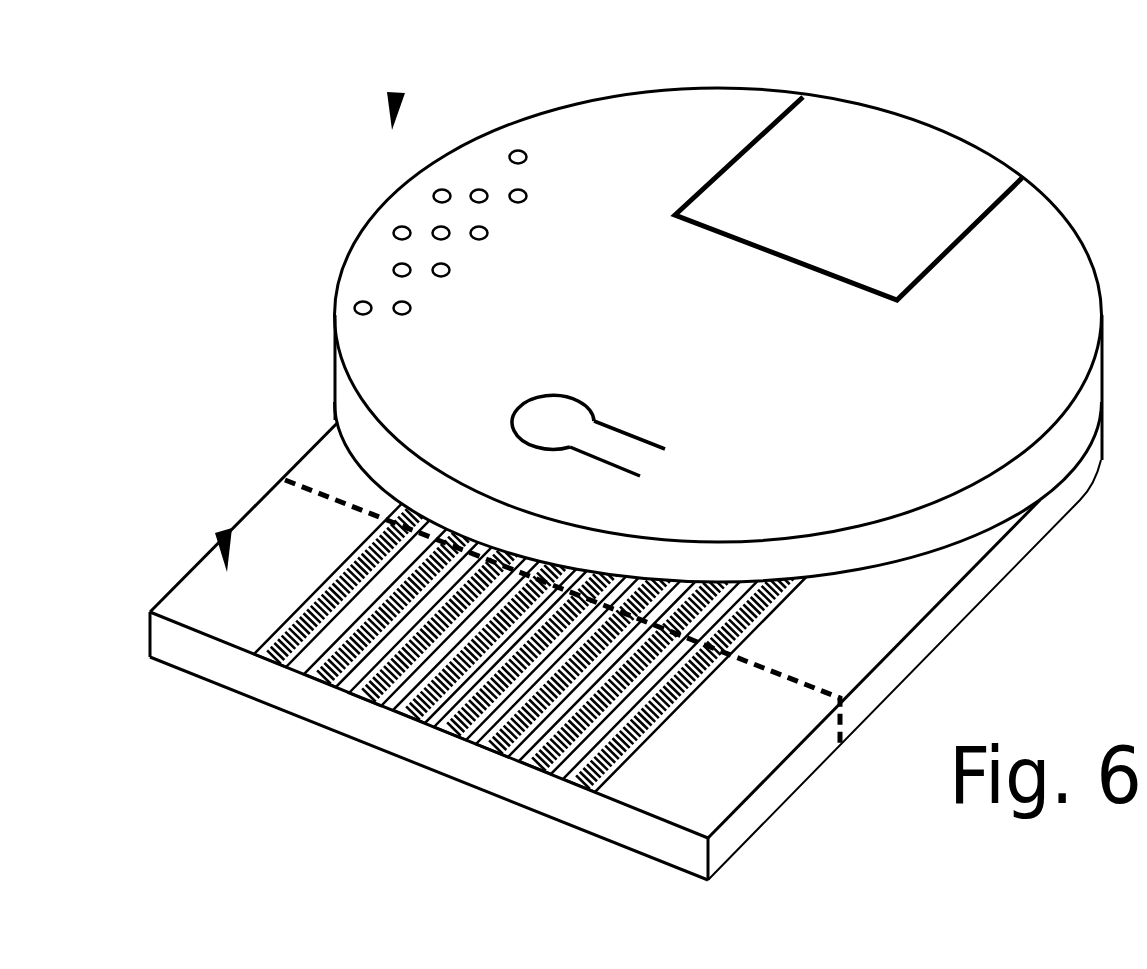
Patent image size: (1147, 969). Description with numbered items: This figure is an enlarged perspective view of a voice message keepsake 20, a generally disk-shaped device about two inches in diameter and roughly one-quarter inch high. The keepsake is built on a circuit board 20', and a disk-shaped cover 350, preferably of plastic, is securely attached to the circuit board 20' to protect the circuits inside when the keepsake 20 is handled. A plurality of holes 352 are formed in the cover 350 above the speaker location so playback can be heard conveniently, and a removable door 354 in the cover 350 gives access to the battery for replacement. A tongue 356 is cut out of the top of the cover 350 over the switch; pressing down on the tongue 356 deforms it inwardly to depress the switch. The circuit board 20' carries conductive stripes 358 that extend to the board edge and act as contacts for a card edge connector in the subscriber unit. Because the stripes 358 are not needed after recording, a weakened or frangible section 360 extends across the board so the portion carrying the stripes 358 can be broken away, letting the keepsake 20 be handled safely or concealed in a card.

The voice message keepsake 20 is at (365, 101).
The circuit board 20' is at (617, 640).
The disk-shaped cover 350 is at (1062, 300).
The holes 352 is at (433, 196).
The removable door 354 is at (920, 153).
The tongue 356 is at (558, 432).
The conductive stripes 358 is at (437, 725).
The frangible section 360 is at (318, 493).